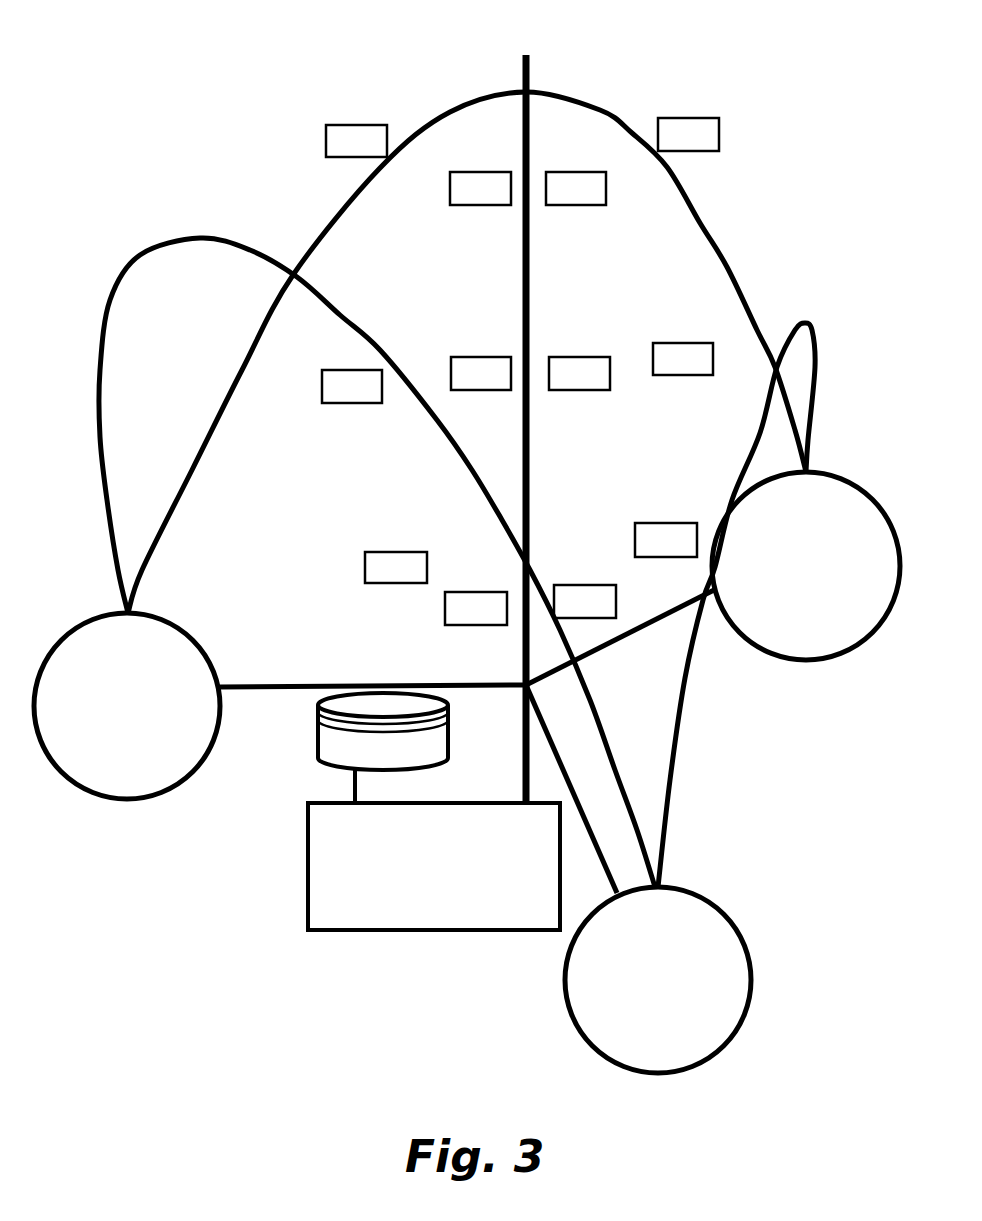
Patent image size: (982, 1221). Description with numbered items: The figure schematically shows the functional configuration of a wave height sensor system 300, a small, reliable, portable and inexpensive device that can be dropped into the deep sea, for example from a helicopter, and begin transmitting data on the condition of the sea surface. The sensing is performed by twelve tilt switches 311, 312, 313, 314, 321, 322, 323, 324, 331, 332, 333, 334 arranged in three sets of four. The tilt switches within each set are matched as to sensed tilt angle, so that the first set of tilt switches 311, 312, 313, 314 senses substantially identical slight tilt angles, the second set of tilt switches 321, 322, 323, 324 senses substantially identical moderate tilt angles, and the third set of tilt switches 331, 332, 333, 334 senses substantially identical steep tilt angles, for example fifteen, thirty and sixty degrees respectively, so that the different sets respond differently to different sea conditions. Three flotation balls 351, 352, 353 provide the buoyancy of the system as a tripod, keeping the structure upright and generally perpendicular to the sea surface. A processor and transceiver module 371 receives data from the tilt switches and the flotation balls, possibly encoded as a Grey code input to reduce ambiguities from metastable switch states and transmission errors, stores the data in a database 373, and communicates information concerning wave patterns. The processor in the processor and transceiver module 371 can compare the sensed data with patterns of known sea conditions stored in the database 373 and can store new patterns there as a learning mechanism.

The wave height sensor system 300 is at (156, 199).
The tilt switch 311 is at (526, 502).
The tilt switch 312 is at (526, 502).
The tilt switch 313 is at (526, 502).
The tilt switch 314 is at (526, 502).
The tilt switch 321 is at (526, 313).
The tilt switch 322 is at (526, 313).
The tilt switch 323 is at (526, 313).
The tilt switch 324 is at (526, 313).
The tilt switch 331 is at (526, 122).
The tilt switch 332 is at (526, 122).
The tilt switch 333 is at (526, 122).
The tilt switch 334 is at (526, 122).
The flotation ball 351 is at (106, 724).
The flotation ball 352 is at (785, 576).
The flotation ball 353 is at (637, 992).
The processor and transceiver module 371 is at (306, 877).
The database 373 is at (318, 717).